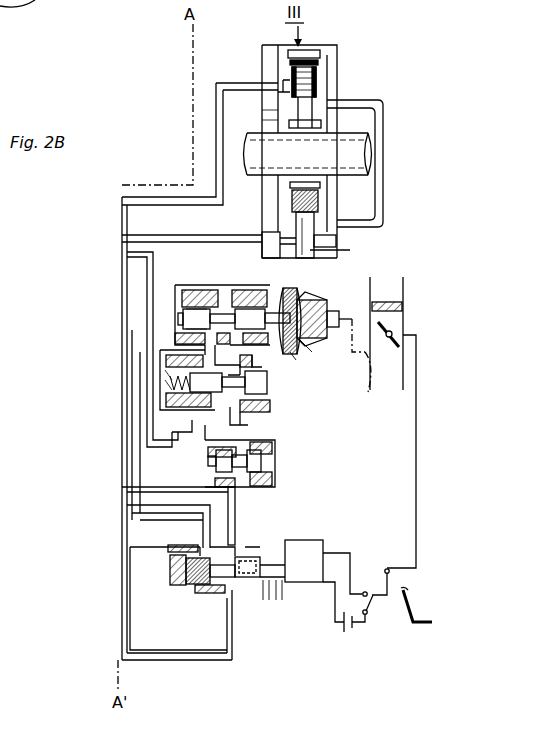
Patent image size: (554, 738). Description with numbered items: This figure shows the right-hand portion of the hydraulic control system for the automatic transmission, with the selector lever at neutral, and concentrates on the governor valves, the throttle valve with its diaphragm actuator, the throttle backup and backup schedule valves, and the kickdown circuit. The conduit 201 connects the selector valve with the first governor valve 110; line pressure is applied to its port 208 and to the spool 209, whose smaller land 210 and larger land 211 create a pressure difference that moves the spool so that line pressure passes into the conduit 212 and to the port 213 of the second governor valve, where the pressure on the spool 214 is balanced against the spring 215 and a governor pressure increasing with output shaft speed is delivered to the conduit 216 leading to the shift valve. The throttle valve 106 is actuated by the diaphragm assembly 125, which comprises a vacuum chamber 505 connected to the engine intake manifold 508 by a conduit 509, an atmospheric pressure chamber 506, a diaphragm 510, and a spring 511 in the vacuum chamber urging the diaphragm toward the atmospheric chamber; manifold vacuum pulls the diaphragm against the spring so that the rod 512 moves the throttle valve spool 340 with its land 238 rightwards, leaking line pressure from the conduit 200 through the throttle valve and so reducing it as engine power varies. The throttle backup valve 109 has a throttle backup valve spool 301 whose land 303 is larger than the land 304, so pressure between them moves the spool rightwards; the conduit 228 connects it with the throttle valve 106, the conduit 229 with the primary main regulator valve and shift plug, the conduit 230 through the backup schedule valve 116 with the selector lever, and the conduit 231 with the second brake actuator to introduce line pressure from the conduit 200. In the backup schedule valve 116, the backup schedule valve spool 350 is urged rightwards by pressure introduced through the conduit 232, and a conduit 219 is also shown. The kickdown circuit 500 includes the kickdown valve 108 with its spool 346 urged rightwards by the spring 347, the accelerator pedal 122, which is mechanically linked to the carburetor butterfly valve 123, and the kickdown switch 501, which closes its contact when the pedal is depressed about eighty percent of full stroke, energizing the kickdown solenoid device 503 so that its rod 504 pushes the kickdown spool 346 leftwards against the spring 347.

The throttle valve 106 is at (173, 297).
The kickdown valve 108 is at (168, 562).
The throttle backup valve 109 is at (270, 384).
The first governor valve 110 is at (326, 255).
The backup schedule valve 116 is at (328, 470).
The accelerator pedal 122 is at (415, 607).
The carburetor butterfly valve 123 is at (395, 330).
The diaphragm assembly 125 is at (362, 315).
The conduit 200 is at (167, 352).
The conduit 201 is at (191, 242).
The port 208 is at (268, 247).
The spool 209 is at (340, 244).
The smaller land 210 is at (350, 250).
The larger land 211 is at (376, 226).
The conduit 212 is at (378, 156).
The port 213 is at (323, 102).
The spool 214 is at (322, 72).
The spring 215 is at (313, 52).
The conduit 216 is at (229, 82).
The conduit 219 is at (215, 530).
The conduit 228 is at (262, 372).
The conduit 229 is at (240, 402).
The conduit 230 is at (272, 440).
The conduit 231 is at (163, 398).
The conduit 232 is at (197, 460).
The land 238 is at (248, 306).
The throttle backup valve spool 301 is at (268, 403).
The land 303 is at (265, 393).
The land 304 is at (192, 432).
The throttle valve spool 340 is at (226, 318).
The spool 346 is at (212, 588).
The spring 347 is at (172, 578).
The backup schedule valve spool 350 is at (255, 478).
The kickdown circuit 500 is at (386, 535).
The kickdown switch 501 is at (373, 604).
The kickdown solenoid device 503 is at (298, 538).
The rod 504 is at (273, 600).
The vacuum chamber 505 is at (305, 302).
The atmospheric pressure chamber 506 is at (288, 292).
The intake manifold 508 is at (393, 422).
The conduit 509 is at (360, 392).
The diaphragm 510 is at (300, 356).
The spring 511 is at (305, 345).
The rod 512 is at (270, 298).